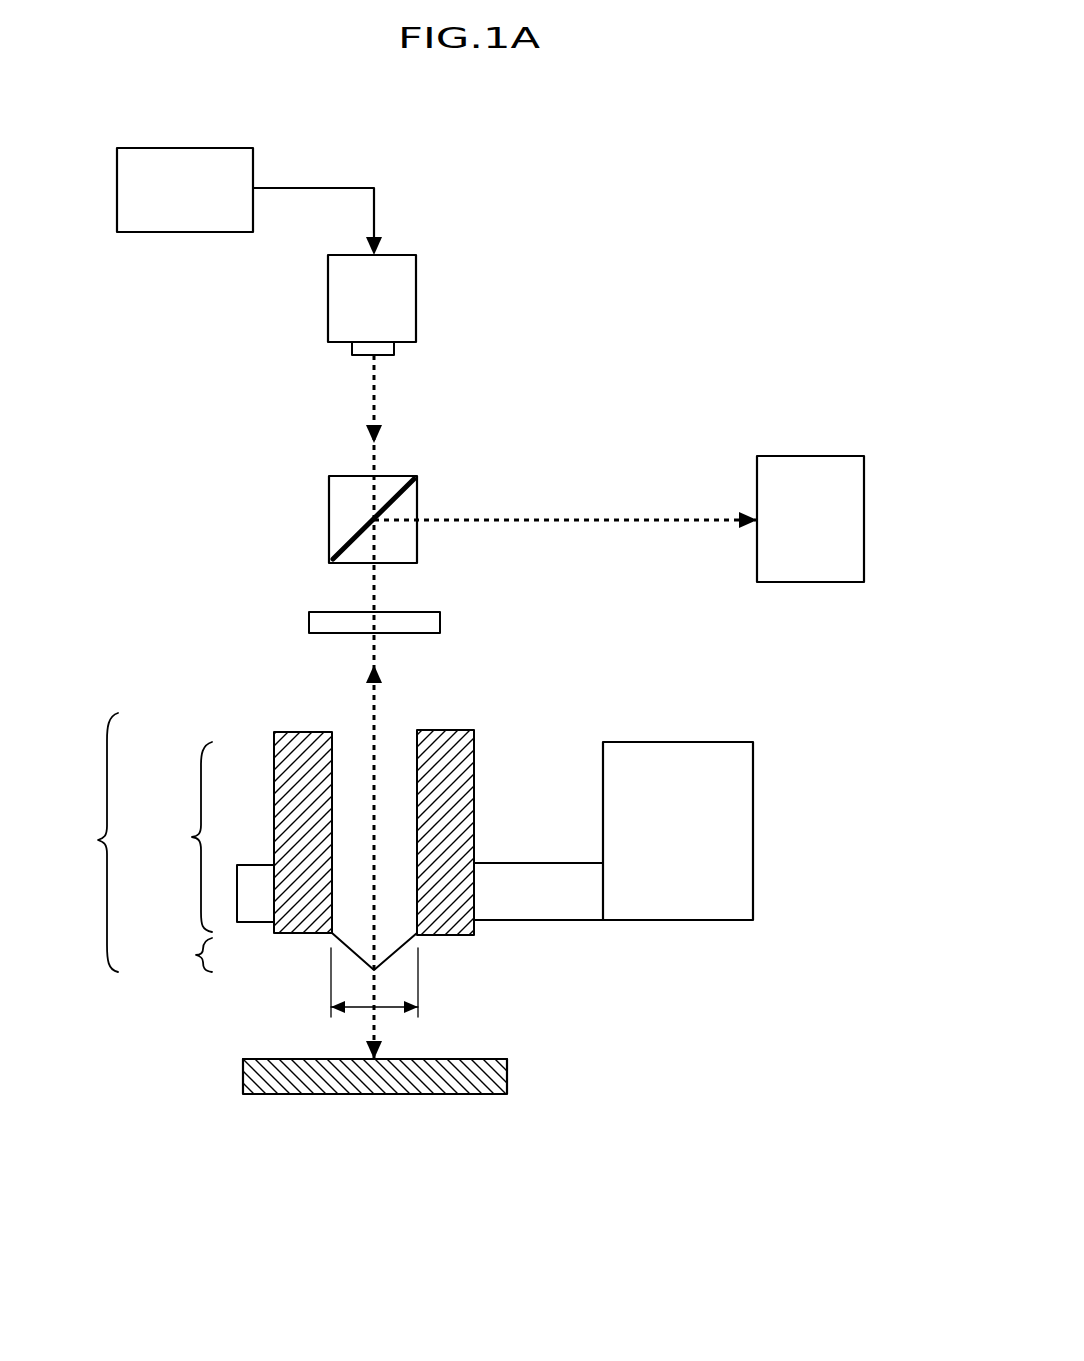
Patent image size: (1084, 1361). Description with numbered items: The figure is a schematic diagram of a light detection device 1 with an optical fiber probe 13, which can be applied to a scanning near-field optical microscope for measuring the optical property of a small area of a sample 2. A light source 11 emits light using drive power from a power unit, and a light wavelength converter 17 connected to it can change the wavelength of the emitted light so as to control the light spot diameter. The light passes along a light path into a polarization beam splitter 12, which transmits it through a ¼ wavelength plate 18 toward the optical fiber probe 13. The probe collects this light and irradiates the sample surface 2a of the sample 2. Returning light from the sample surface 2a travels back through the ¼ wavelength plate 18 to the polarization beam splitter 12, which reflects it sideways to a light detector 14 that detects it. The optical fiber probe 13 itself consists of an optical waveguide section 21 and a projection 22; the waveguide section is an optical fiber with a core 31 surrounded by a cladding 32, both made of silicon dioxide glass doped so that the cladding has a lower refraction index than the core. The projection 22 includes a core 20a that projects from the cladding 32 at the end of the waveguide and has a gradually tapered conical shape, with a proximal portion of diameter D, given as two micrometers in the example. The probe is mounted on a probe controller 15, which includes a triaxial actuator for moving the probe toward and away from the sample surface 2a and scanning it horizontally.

The light detection device 1 is at (160, 670).
The sample 2 is at (408, 1094).
The sample surface 2a is at (464, 1059).
The light source 11 is at (416, 297).
The polarization beam splitter 12 is at (352, 530).
The optical fiber probe 13 is at (89, 842).
The light detector 14 is at (812, 456).
The probe controller 15 is at (690, 742).
The light wavelength converter 17 is at (165, 148).
The ¼ wavelength plate 18 is at (322, 612).
The core 20a is at (400, 940).
The optical waveguide section 21 is at (184, 837).
The projection 22 is at (184, 955).
The core 31 is at (352, 742).
The cladding 32 is at (290, 738).
The diameter D is at (358, 1012).